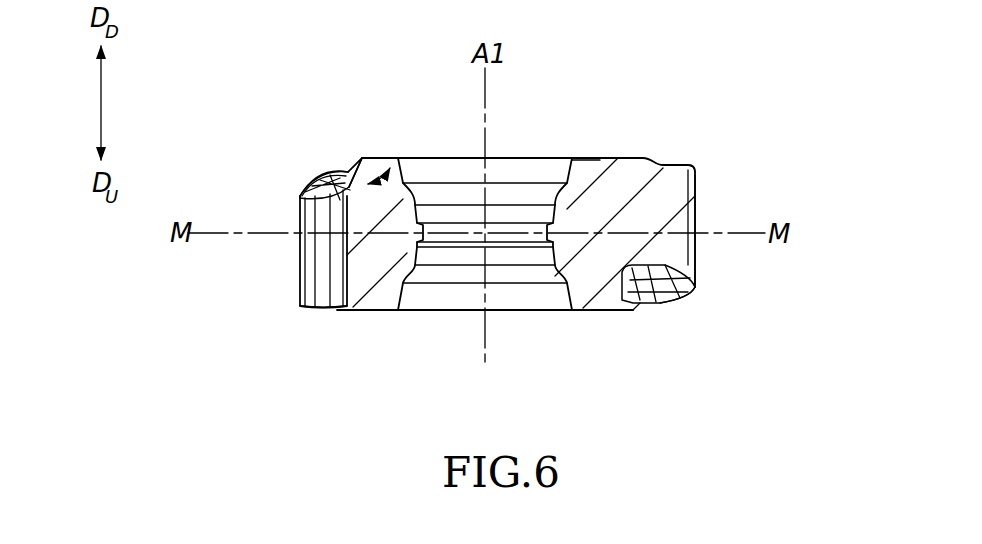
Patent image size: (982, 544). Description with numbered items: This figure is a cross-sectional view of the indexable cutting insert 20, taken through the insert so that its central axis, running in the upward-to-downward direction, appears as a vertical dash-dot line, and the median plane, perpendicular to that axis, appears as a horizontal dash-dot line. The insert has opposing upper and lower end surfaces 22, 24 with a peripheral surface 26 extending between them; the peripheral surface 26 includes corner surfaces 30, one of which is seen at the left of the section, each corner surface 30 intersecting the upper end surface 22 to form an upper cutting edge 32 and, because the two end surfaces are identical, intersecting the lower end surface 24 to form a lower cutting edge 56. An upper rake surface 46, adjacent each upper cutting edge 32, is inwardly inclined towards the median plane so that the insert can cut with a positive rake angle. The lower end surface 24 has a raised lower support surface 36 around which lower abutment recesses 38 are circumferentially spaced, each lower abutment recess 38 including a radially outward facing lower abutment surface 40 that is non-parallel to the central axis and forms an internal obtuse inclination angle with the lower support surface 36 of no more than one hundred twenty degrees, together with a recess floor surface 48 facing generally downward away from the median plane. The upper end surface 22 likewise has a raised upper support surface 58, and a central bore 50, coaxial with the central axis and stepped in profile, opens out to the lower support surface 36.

The indexable cutting insert 20 is at (652, 118).
The upper end surface 22 is at (608, 312).
The lower end surface 24 is at (628, 155).
The peripheral surface 26 is at (698, 197).
The corner surface 30 is at (297, 273).
The upper cutting edge 32 is at (303, 308).
The lower support surface 36 is at (597, 157).
The lower abutment recess 38 is at (333, 178).
The lower abutment surface 40 is at (352, 176).
The upper rake surface 46 is at (679, 293).
The recess floor surface 48 is at (318, 184).
The central bore 50 is at (441, 198).
The lower cutting edge 56 is at (697, 163).
The upper support surface 58 is at (585, 312).